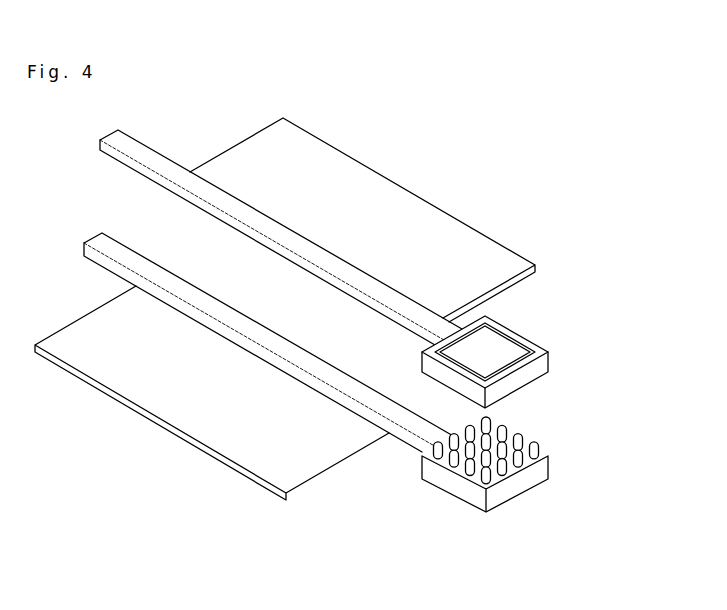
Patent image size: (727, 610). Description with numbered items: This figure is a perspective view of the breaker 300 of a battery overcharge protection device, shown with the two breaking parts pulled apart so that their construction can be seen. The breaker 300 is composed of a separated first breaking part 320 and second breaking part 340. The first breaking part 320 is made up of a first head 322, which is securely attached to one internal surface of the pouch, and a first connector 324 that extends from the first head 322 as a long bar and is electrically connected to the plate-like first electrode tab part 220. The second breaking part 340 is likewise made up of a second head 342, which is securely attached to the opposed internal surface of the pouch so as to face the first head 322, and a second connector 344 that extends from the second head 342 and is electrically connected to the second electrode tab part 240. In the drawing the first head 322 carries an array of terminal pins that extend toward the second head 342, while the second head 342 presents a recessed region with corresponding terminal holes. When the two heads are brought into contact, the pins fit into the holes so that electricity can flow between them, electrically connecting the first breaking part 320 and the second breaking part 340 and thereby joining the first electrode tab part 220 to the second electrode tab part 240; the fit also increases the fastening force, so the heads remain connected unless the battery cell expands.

The first electrode tab part 220 is at (148, 390).
The second electrode tab part 240 is at (368, 183).
The breaker 300 is at (505, 437).
The first breaking part 320 is at (446, 506).
The first head 322 is at (437, 478).
The first connector 324 is at (318, 368).
The second breaking part 340 is at (543, 343).
The second head 342 is at (556, 354).
The second connector 344 is at (387, 293).